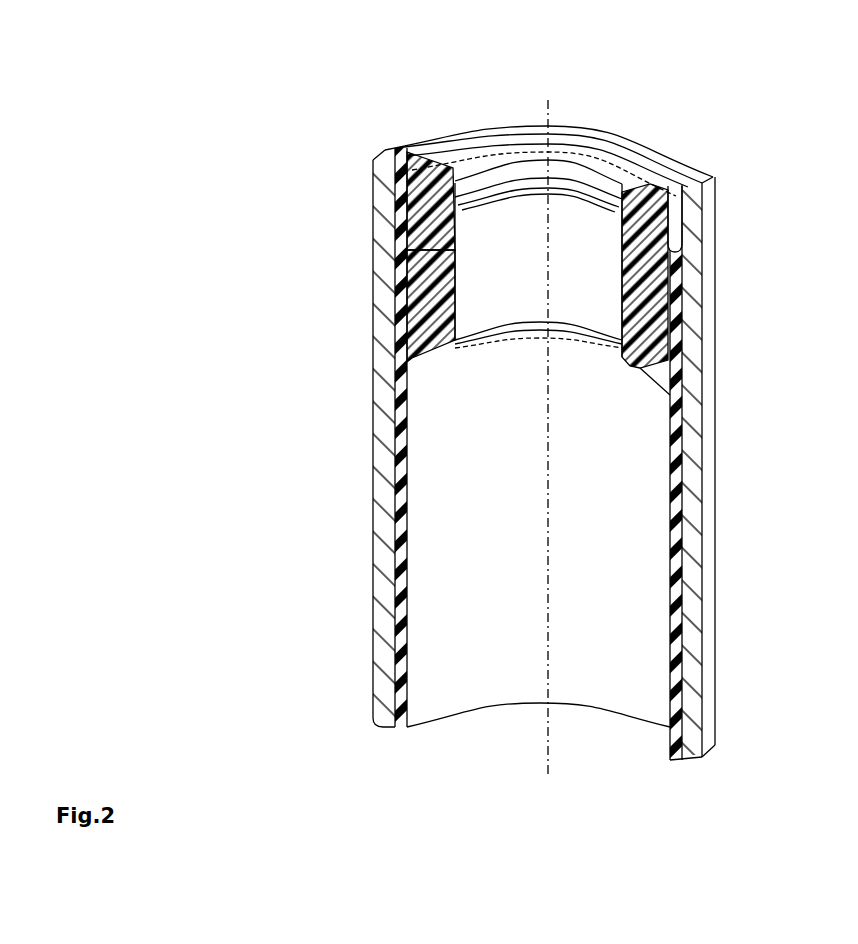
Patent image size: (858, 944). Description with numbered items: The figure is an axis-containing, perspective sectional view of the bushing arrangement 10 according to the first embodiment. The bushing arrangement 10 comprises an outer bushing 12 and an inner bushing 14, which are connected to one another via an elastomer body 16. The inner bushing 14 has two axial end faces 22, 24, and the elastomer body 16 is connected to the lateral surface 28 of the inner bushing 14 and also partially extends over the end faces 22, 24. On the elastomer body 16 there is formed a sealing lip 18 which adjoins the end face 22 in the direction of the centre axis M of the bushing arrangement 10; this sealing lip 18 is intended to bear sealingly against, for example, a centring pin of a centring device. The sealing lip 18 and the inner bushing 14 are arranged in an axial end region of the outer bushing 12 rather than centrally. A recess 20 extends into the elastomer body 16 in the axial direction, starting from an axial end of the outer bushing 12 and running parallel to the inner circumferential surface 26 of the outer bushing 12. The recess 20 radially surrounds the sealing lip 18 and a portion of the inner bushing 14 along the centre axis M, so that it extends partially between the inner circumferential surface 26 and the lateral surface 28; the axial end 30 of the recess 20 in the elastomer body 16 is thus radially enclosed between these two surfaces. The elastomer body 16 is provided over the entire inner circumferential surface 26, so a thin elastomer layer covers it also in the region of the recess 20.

The bushing arrangement 10 is at (773, 106).
The outer bushing 12 is at (385, 385).
The inner bushing 14 is at (645, 300).
The elastomer body 16 is at (690, 518).
The sealing lip 18 is at (500, 145).
The recess 20 is at (408, 150).
The axial end face 22 is at (618, 178).
The axial end face 24 is at (650, 368).
The inner circumferential surface 26 is at (400, 325).
The lateral surface 28 is at (663, 252).
The axial end of the recess 30 is at (405, 228).
The centre axis M is at (547, 775).